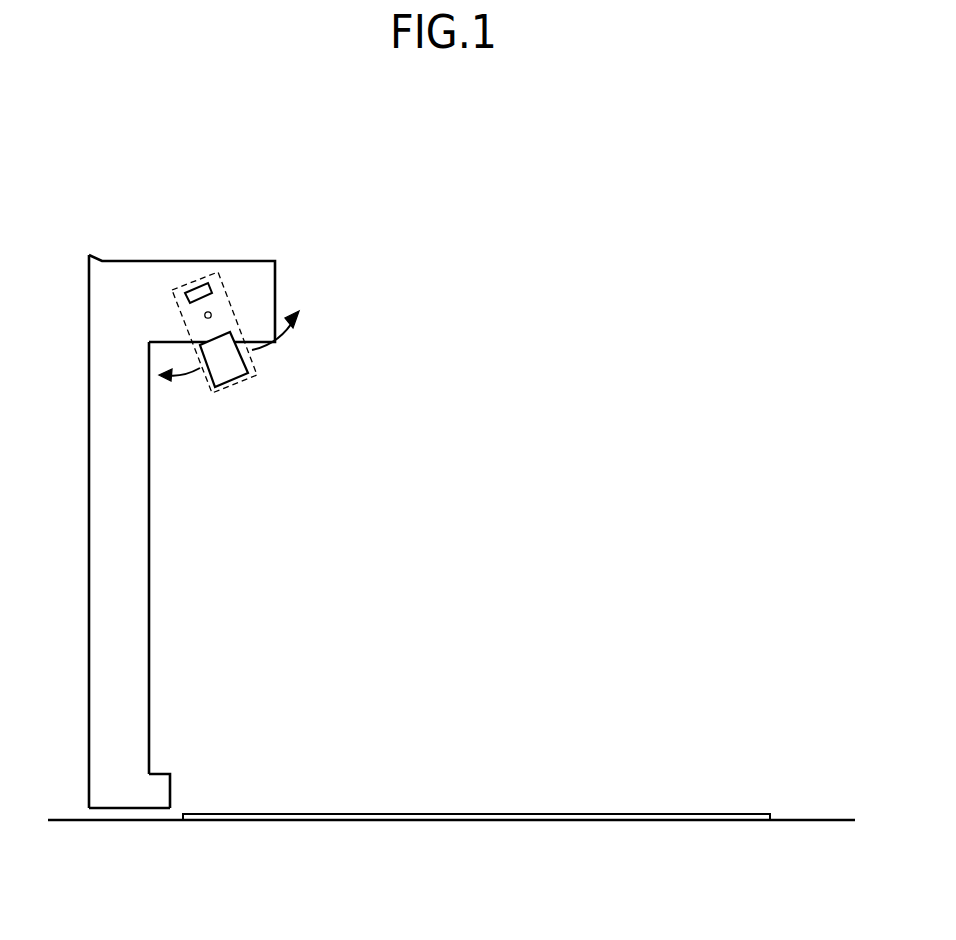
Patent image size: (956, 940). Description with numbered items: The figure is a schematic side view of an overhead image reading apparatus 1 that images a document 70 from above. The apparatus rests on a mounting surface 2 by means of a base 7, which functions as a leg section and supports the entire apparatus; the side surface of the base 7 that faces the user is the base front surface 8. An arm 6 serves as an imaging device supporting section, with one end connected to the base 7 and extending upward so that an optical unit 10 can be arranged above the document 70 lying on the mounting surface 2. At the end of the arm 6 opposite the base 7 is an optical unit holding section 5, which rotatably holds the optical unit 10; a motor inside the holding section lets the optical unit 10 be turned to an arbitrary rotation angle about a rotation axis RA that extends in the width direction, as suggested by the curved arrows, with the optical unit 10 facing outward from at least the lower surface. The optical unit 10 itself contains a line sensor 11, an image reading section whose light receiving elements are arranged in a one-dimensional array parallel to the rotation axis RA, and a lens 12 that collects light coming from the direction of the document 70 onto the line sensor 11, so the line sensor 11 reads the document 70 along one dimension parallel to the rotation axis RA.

The overhead image reading apparatus 1 is at (98, 218).
The mounting surface 2 is at (820, 818).
The optical unit holding section 5 is at (148, 260).
The arm 6 is at (89, 489).
The base 7 is at (89, 788).
The base front surface 8 is at (171, 787).
The optical unit 10 is at (250, 381).
The line sensor 11 is at (201, 283).
The lens 12 is at (229, 328).
The rotation axis RA is at (211, 310).
The document 70 is at (482, 812).